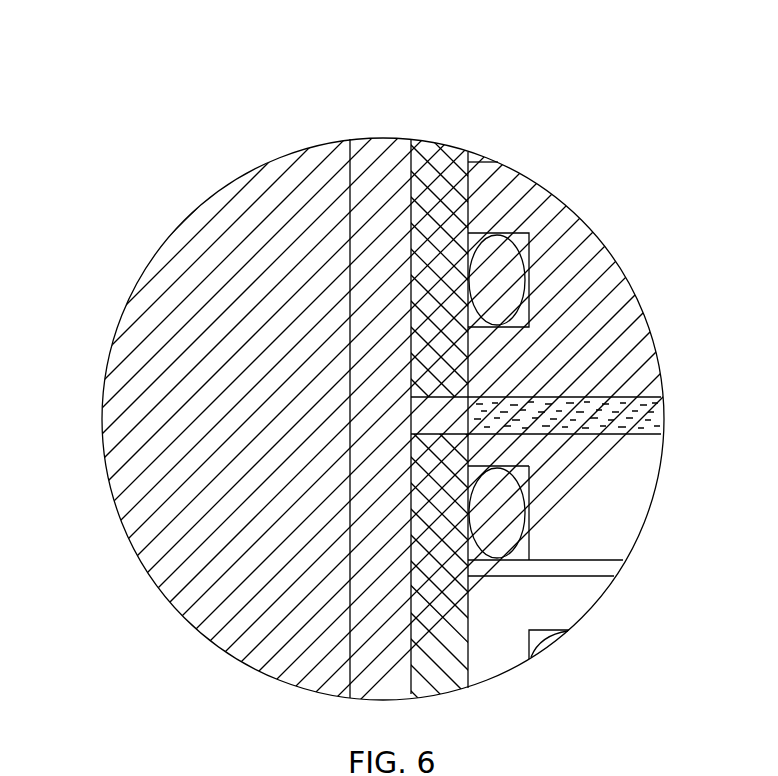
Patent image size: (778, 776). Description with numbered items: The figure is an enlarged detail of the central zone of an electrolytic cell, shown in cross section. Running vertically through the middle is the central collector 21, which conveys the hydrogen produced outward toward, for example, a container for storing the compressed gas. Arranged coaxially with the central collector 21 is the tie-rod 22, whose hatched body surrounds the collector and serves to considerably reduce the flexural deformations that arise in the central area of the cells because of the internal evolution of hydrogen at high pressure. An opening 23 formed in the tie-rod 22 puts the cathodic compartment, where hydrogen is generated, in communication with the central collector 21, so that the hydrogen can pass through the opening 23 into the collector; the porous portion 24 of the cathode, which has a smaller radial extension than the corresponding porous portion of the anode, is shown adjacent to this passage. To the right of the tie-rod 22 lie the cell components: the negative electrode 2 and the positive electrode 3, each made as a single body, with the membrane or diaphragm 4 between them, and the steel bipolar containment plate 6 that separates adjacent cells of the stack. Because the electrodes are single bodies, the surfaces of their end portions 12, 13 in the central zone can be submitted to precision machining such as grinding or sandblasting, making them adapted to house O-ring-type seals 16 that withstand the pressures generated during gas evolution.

The negative electrode 2 is at (607, 483).
The positive electrode 3 is at (497, 647).
The membrane or diaphragm 4 is at (592, 567).
The bipolar containment plate 6 is at (600, 285).
The end portion surface of electrode 12 is at (530, 480).
The end portion surface of electrode 13 is at (510, 467).
The O-ring-type seal 16 is at (497, 267).
The central collector 21 is at (372, 157).
The tie-rod 22 is at (430, 175).
The opening 23 is at (432, 408).
The porous portion 24 is at (538, 410).